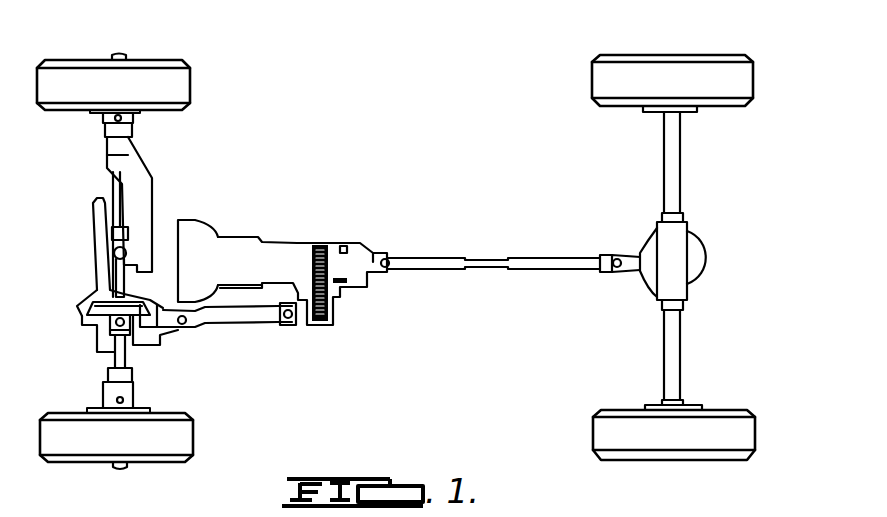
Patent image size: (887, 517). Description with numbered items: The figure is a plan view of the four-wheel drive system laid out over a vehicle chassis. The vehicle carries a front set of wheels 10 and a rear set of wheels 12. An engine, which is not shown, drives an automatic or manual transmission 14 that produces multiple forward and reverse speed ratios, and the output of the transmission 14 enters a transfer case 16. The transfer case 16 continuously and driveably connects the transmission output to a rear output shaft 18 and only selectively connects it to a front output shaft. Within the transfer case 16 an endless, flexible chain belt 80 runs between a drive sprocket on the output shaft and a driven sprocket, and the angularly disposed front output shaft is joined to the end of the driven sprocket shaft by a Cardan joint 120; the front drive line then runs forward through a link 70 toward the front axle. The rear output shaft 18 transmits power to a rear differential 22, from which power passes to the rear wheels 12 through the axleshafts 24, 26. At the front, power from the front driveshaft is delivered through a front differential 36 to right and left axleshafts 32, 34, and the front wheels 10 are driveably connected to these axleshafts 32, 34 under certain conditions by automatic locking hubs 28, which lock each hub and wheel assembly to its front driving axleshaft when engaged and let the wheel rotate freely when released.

The front wheels 10 is at (182, 80).
The rear wheels 12 is at (600, 80).
The transmission 14 is at (195, 228).
The transfer case 16 is at (298, 244).
The rear output shaft 18 is at (536, 258).
The rear differential 22 is at (702, 266).
The axleshaft 24 is at (666, 158).
The axleshaft 26 is at (682, 346).
The automatic locking hub 28 is at (120, 56).
The right front axleshaft 32 is at (112, 190).
The left front axleshaft 34 is at (115, 348).
The front differential 36 is at (88, 310).
The shift link 70 is at (206, 326).
The chain belt 80 is at (330, 318).
The Cardan joint 120 is at (290, 326).